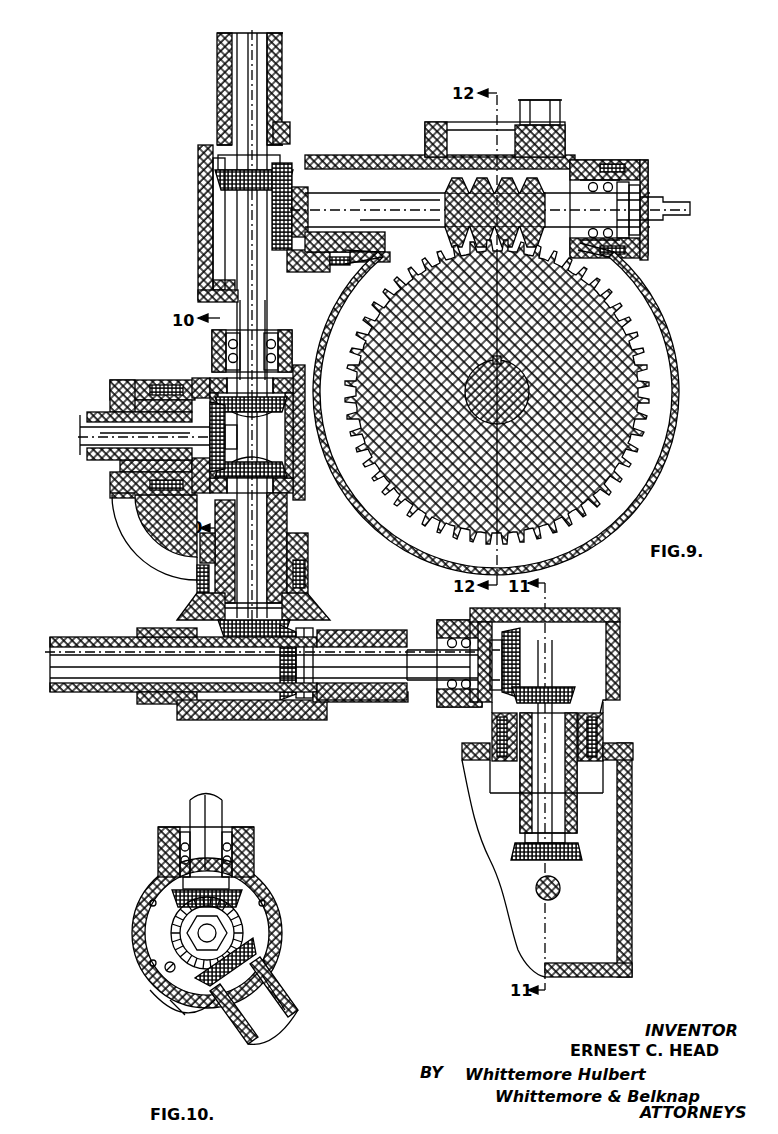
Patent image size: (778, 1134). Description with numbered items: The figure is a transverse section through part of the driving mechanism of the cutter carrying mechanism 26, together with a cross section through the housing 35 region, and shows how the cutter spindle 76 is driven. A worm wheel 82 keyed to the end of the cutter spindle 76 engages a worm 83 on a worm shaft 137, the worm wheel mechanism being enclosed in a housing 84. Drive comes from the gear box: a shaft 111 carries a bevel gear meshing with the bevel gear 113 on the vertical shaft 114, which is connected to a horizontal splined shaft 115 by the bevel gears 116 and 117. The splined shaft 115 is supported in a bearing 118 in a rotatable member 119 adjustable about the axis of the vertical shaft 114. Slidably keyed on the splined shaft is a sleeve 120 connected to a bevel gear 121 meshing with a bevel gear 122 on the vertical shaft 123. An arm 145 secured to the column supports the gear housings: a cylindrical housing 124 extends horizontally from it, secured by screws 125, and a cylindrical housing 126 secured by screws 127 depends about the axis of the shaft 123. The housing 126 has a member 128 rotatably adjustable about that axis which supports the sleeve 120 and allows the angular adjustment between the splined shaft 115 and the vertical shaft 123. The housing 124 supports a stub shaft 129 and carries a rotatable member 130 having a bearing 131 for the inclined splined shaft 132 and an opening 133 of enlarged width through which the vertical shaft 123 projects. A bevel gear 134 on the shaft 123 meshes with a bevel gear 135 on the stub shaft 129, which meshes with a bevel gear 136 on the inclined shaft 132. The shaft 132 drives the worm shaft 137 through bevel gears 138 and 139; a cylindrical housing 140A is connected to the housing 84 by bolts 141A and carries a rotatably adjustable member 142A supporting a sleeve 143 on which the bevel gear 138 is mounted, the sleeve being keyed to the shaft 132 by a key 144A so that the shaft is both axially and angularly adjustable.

In FIG. 9, the cutter carrying mechanism 26 is at (160, 220).
In FIG. 9, the lower housing 35 is at (630, 783).
In FIG. 9, the cutter spindle 76 is at (510, 385).
In FIG. 9, the worm wheel 82 is at (605, 422).
In FIG. 9, the worm 83 is at (450, 233).
In FIG. 9, the housing 84 is at (585, 172).
In FIG. 9, the shaft 111 is at (558, 894).
In FIG. 9, the bevel gear 113 is at (580, 853).
In FIG. 9, the vertical shaft 114 is at (538, 805).
In FIG. 9, the horizontal splined shaft 115 is at (430, 668).
In FIG. 9, the bevel gear 116 is at (540, 690).
In FIG. 9, the bevel gear 117 is at (522, 642).
In FIG. 9, the bearing 118 is at (438, 620).
In FIG. 9, the rotatable member 119 is at (474, 622).
In FIG. 9, the sleeve 120 is at (363, 632).
In FIG. 9, the bevel gear 121 is at (283, 693).
In FIG. 9, the bevel gear 122 is at (287, 625).
In FIG. 9, the vertical shaft 123 is at (247, 577).
In FIG. 10, the vertical shaft 123 is at (238, 1025).
In FIG. 9, the cylindrical housing 124 is at (195, 379).
In FIG. 9, the screws 125 is at (112, 379).
In FIG. 9, the cylindrical housing 126 is at (175, 608).
In FIG. 9, the screws 127 is at (150, 567).
In FIG. 9, the member 128 is at (173, 712).
In FIG. 9, the stub shaft 129 is at (128, 438).
In FIG. 10, the stub shaft 129 is at (212, 933).
In FIG. 9, the rotatable member 130 is at (213, 353).
In FIG. 10, the rotatable member 130 is at (265, 887).
In FIG. 9, the bearing 131 is at (293, 344).
In FIG. 10, the bearing 131 is at (170, 849).
In FIG. 9, the shaft 132 is at (243, 341).
In FIG. 10, the shaft 132 is at (200, 806).
In FIG. 10, the opening 133 is at (203, 1022).
In FIG. 9, the bevel gear 134 is at (232, 468).
In FIG. 10, the bevel gear 134 is at (192, 976).
In FIG. 9, the bevel gear 135 is at (228, 437).
In FIG. 10, the bevel gear 135 is at (173, 951).
In FIG. 9, the bevel gear 136 is at (270, 412).
In FIG. 10, the bevel gear 136 is at (172, 894).
In FIG. 9, the worm shaft 137 is at (417, 208).
In FIG. 9, the bevel gear 138 is at (225, 187).
In FIG. 9, the bevel gear 139 is at (295, 187).
In FIG. 9, the cylindrical housing 140A is at (292, 275).
In FIG. 9, the bolts 141A is at (312, 268).
In FIG. 9, the rotatably adjustable member 142A is at (287, 133).
In FIG. 9, the sleeve 143 is at (285, 100).
In FIG. 9, the key 144A is at (230, 226).
In FIG. 9, the arm 145 is at (110, 390).